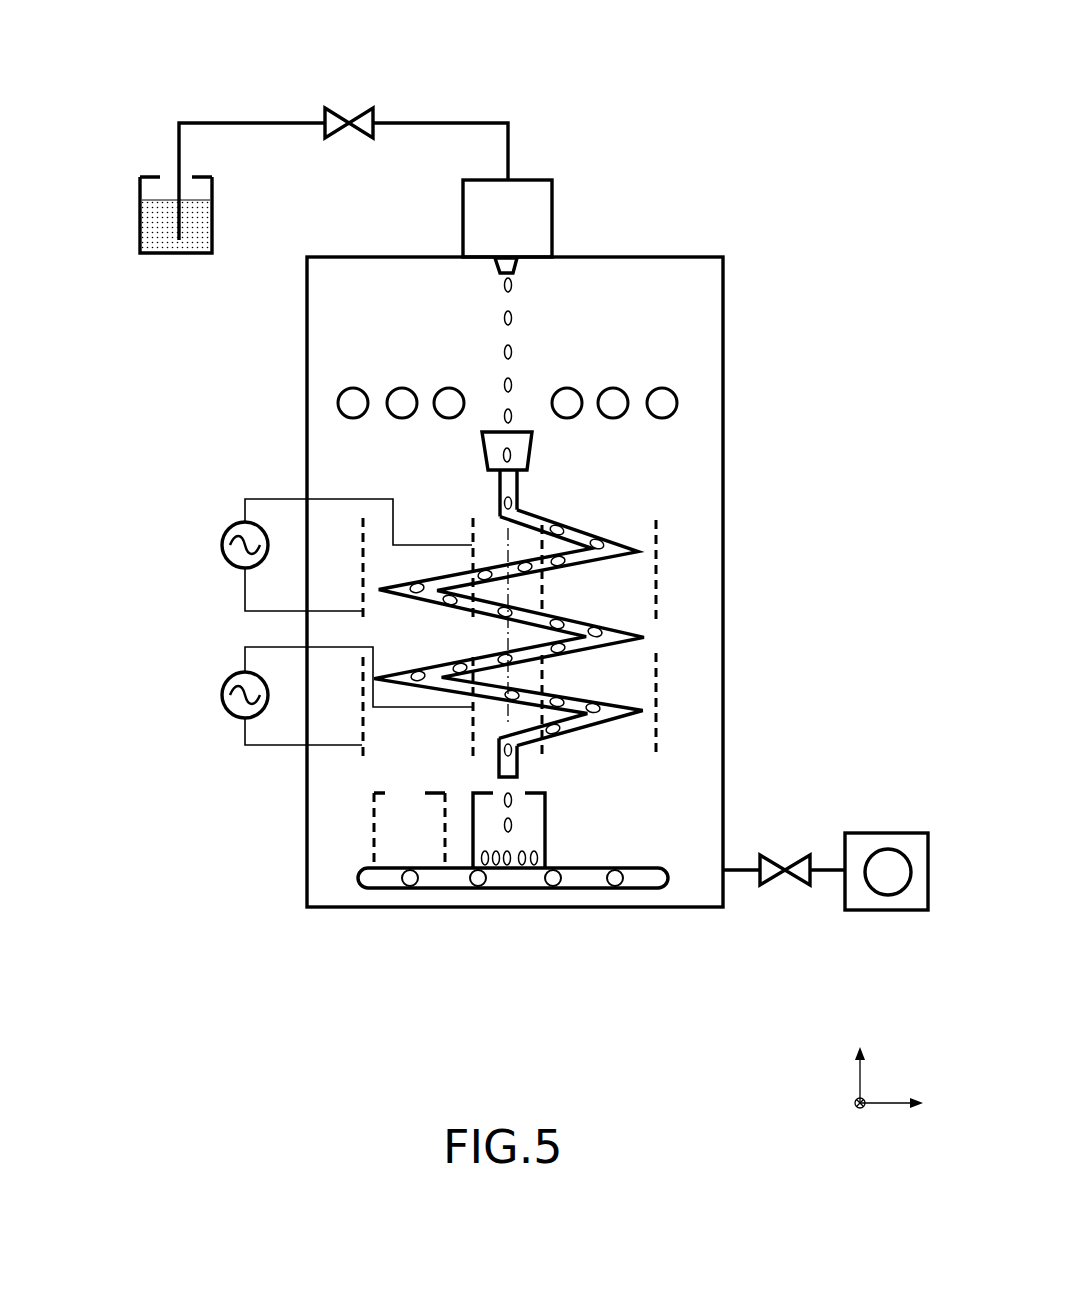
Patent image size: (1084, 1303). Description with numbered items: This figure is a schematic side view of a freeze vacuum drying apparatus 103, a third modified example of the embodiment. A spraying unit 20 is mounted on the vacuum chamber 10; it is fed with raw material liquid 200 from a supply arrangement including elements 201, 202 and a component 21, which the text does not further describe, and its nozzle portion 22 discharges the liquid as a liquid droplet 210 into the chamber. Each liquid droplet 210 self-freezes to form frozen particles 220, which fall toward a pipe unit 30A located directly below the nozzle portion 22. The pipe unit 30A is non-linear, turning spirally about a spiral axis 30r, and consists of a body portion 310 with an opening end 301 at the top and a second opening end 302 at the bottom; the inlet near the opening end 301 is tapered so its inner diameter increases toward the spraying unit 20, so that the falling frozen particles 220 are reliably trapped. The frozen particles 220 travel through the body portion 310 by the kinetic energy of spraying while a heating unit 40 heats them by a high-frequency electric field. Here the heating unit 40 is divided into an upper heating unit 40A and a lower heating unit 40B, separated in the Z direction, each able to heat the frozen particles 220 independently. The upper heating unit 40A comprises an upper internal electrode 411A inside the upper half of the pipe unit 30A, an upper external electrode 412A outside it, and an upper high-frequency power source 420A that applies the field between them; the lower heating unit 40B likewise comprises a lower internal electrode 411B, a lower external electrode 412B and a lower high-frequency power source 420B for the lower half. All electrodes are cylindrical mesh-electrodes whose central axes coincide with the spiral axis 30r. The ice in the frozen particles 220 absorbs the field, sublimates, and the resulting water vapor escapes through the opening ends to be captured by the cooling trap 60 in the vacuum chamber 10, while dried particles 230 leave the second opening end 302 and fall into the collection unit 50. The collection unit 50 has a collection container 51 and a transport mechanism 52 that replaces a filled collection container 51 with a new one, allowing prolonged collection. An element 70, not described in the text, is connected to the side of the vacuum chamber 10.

The freeze vacuum drying apparatus 103 is at (760, 214).
The vacuum chamber 10 is at (723, 416).
The spraying unit 20 is at (424, 176).
The supply unit body 21 is at (548, 212).
The nozzle portion 22 is at (518, 263).
The raw material liquid 200 is at (200, 240).
The tank 201 is at (214, 186).
The supply pipe with valve 202 is at (432, 120).
The liquid droplet 210 is at (495, 292).
The frozen particles 220 is at (500, 503).
The dried particles 230 is at (428, 684).
The pipe unit 30A is at (662, 606).
The opening end 301 is at (524, 428).
The body portion 310 is at (577, 527).
The second opening end 302 is at (520, 778).
The spiral axis 30r is at (542, 530).
The heating unit 40 is at (263, 592).
The upper heating unit 40A is at (263, 547).
The lower heating unit 40B is at (263, 708).
The upper internal electrode 411A is at (472, 522).
The upper external electrode 412A is at (368, 617).
The upper high-frequency power source 420A is at (225, 520).
The lower internal electrode 411B is at (470, 666).
The lower external electrode 412B is at (360, 752).
The lower high-frequency power source 420B is at (225, 680).
The collection unit 50 is at (461, 917).
The collection container 51 is at (370, 830).
The transport mechanism 52 is at (508, 890).
The cooling trap 60 is at (392, 390).
The pump 70 is at (887, 833).